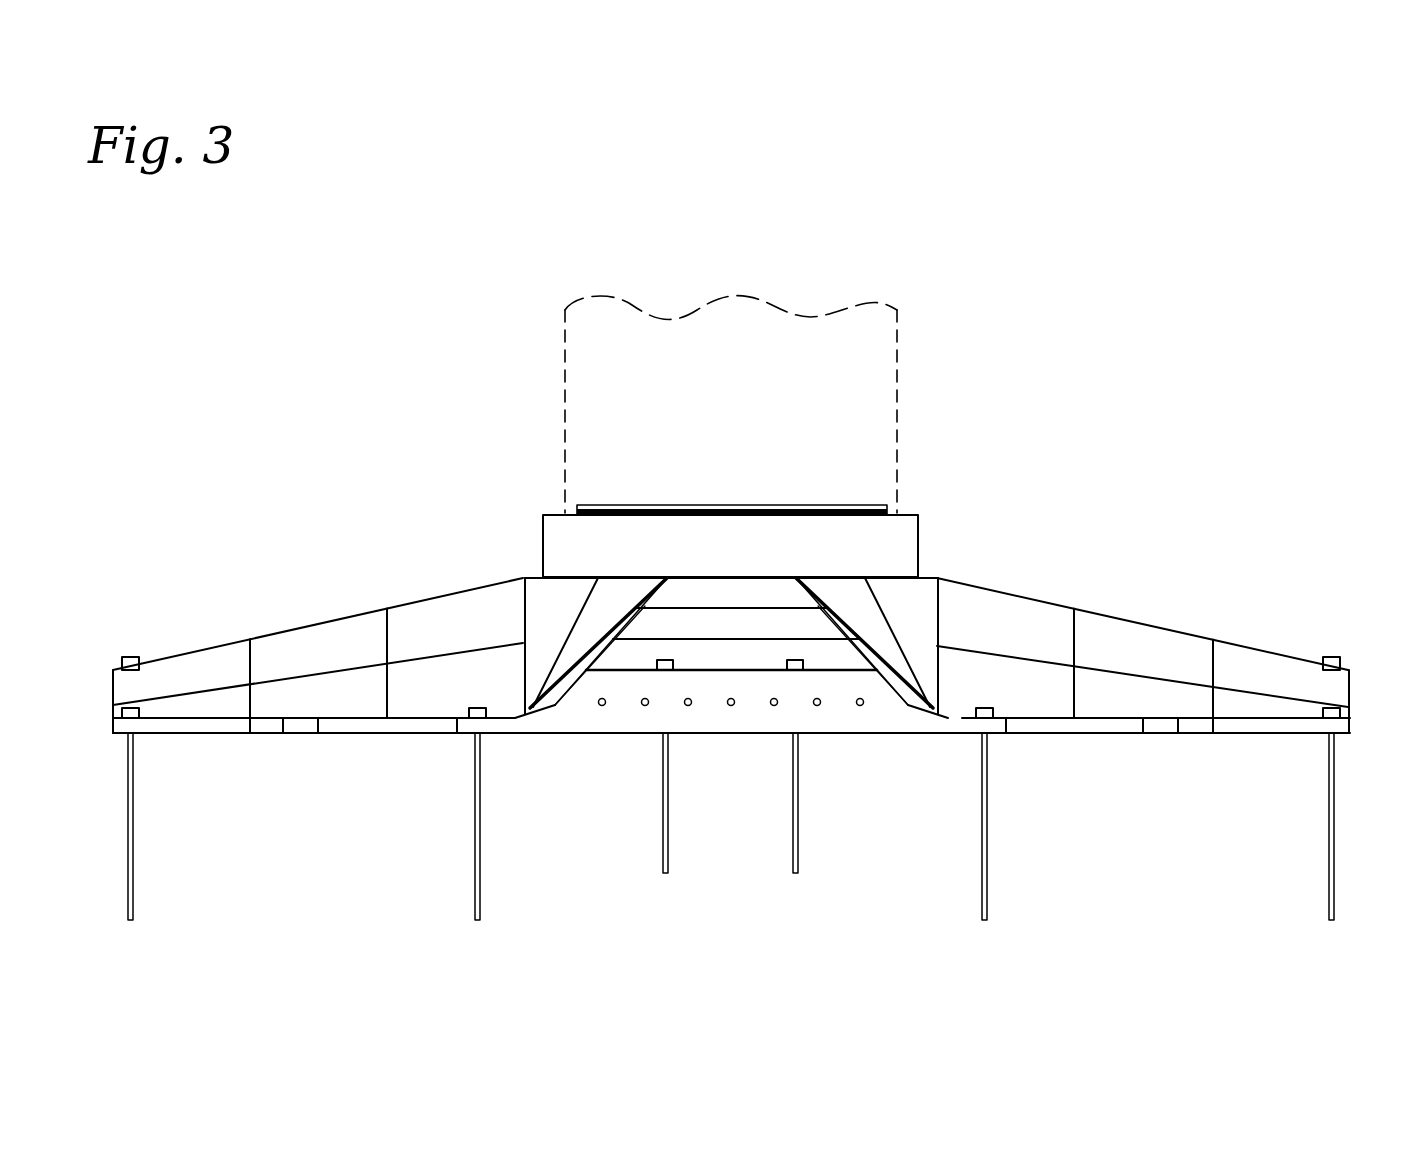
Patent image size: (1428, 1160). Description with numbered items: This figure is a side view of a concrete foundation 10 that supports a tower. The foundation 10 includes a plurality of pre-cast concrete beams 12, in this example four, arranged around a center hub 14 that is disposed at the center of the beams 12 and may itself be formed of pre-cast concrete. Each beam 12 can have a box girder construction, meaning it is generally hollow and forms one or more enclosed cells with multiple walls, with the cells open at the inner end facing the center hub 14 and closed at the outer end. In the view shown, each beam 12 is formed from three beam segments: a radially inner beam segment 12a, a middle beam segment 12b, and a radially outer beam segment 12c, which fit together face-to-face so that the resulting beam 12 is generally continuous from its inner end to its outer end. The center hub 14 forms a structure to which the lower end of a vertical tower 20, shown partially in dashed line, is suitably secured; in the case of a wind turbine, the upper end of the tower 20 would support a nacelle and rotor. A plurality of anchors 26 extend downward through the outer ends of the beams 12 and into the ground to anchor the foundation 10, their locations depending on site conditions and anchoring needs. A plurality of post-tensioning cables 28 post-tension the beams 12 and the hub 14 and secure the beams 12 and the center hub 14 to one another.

The concrete foundation 10 is at (1122, 434).
The pre-cast concrete beam 12 is at (731, 623).
The inner beam segment 12a is at (992, 588).
The middle beam segment 12b is at (1143, 622).
The outer beam segment 12c is at (1257, 642).
The center hub 14 is at (894, 612).
The vertical tower 20 is at (913, 312).
The anchor 26 is at (135, 893).
The post-tensioning cable 28 is at (687, 706).